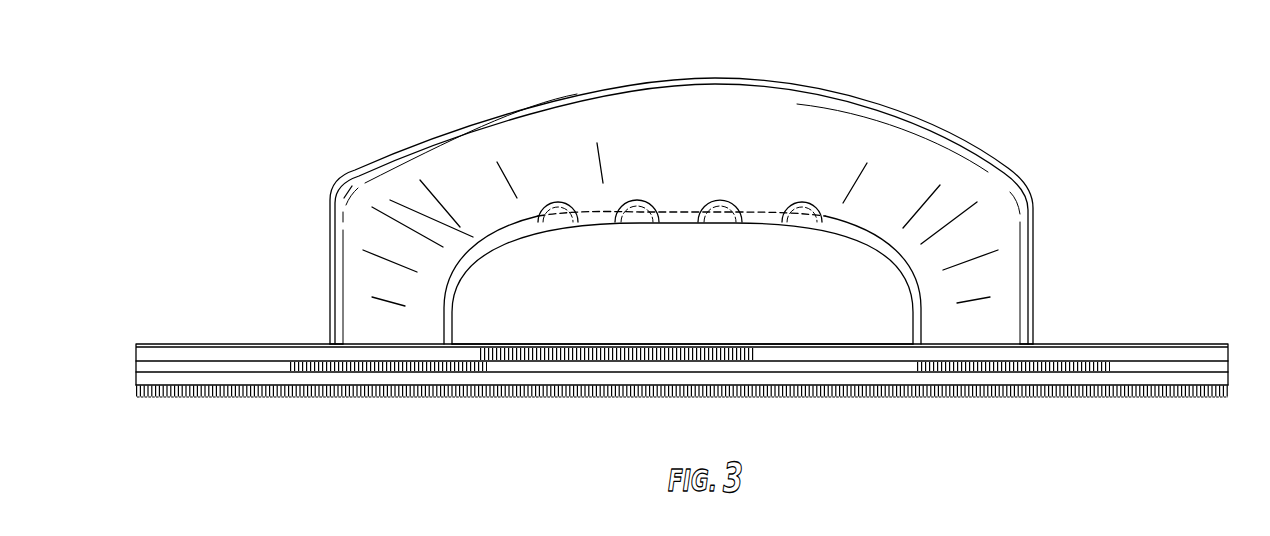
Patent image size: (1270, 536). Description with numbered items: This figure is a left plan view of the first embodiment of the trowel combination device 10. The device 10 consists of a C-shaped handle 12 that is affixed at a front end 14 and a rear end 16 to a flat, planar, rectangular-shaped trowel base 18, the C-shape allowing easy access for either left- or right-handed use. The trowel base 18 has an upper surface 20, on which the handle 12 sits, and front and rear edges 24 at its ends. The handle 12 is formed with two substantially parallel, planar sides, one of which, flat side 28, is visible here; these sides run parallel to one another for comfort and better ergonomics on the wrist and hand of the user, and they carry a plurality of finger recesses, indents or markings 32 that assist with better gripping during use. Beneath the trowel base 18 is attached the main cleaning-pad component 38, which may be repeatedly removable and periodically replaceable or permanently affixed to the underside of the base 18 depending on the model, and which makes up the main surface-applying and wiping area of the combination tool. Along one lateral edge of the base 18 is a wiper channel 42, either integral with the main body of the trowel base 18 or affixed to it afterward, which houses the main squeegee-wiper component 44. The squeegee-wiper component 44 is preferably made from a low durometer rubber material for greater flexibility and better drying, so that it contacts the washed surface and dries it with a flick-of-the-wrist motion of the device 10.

The device 10 is at (122, 80).
The C-shaped handle 12 is at (985, 192).
The front end 14 is at (330, 345).
The rear end 16 is at (1033, 343).
The trowel base 18 is at (592, 322).
The upper surface 20 is at (702, 340).
The front and rear edges 24 is at (133, 350).
The flat side 28 is at (689, 165).
The finger recesses 32 is at (640, 206).
The cleaning-pad component 38 is at (253, 398).
The wiper channel 42 is at (177, 354).
The squeegee-wiper component 44 is at (190, 365).